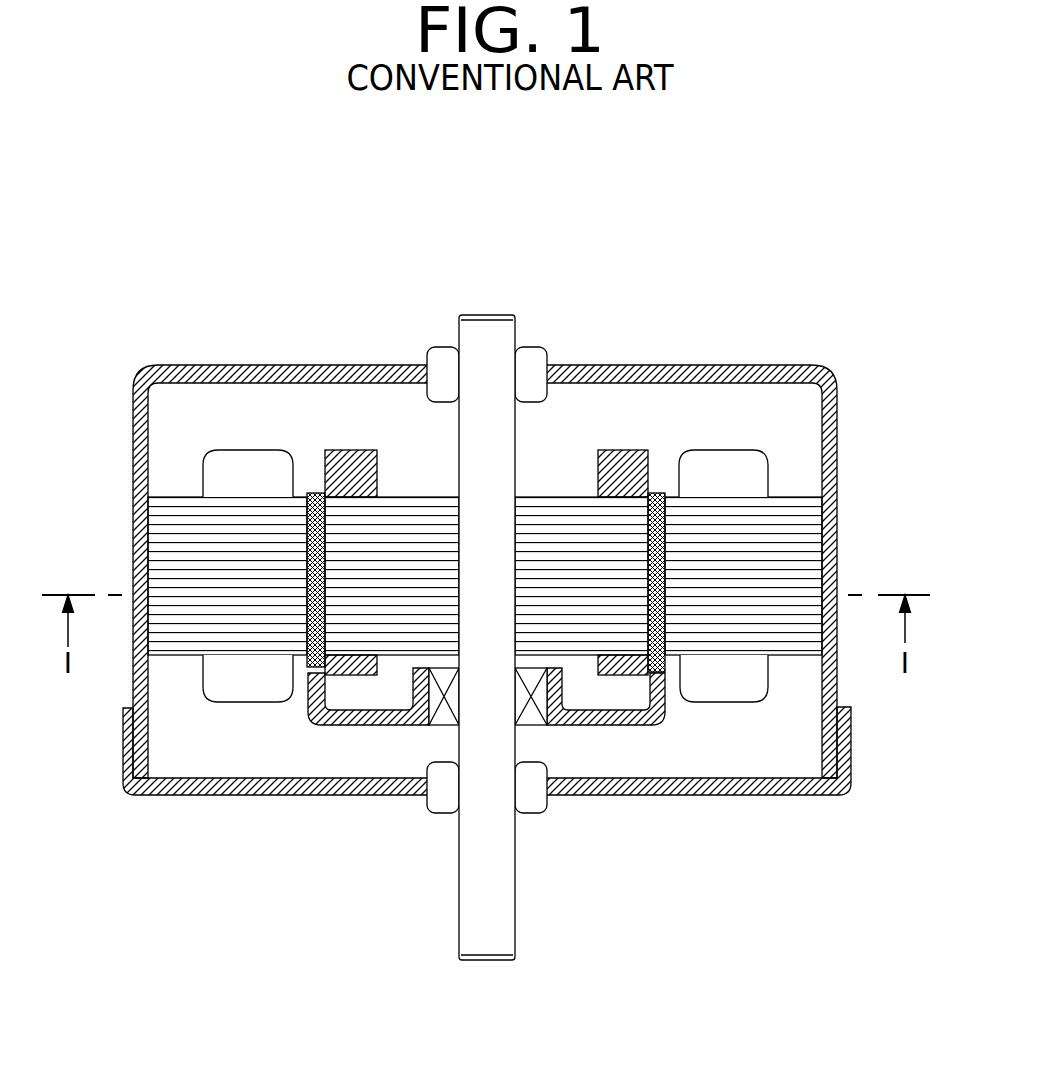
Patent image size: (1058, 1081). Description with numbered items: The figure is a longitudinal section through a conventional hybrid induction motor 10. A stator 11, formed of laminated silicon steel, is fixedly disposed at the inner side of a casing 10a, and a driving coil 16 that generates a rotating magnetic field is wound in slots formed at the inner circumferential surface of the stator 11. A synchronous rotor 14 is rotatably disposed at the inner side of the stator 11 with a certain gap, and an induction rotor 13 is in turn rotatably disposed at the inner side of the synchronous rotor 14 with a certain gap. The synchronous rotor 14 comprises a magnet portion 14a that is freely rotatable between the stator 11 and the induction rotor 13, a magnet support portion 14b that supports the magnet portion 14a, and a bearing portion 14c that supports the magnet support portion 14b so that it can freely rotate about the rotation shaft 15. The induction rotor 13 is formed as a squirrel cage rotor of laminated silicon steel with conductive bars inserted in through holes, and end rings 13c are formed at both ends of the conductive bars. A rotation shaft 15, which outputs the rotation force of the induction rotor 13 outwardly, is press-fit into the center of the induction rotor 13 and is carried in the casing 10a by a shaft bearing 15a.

The hybrid induction motor 10 is at (537, 601).
The casing 10a is at (828, 432).
The stator 11 is at (803, 520).
The induction rotor 13 is at (350, 540).
The end rings 13c is at (620, 473).
The synchronous rotor 14 is at (623, 728).
The magnet portion 14a is at (667, 640).
The magnet support portion 14b is at (660, 700).
The bearing portion 14c is at (537, 697).
The rotation shaft 15 is at (487, 350).
The shaft bearing 15a is at (533, 793).
The driving coil 16 is at (720, 475).